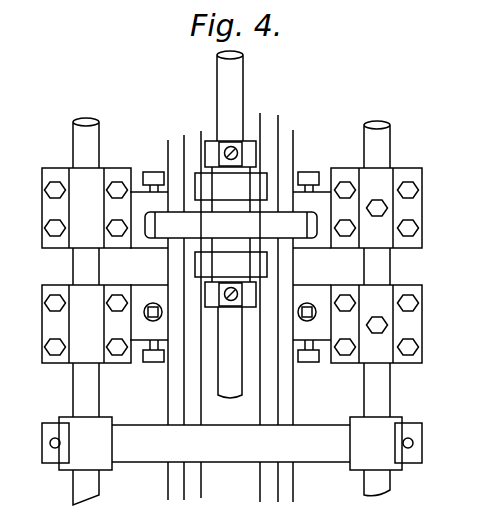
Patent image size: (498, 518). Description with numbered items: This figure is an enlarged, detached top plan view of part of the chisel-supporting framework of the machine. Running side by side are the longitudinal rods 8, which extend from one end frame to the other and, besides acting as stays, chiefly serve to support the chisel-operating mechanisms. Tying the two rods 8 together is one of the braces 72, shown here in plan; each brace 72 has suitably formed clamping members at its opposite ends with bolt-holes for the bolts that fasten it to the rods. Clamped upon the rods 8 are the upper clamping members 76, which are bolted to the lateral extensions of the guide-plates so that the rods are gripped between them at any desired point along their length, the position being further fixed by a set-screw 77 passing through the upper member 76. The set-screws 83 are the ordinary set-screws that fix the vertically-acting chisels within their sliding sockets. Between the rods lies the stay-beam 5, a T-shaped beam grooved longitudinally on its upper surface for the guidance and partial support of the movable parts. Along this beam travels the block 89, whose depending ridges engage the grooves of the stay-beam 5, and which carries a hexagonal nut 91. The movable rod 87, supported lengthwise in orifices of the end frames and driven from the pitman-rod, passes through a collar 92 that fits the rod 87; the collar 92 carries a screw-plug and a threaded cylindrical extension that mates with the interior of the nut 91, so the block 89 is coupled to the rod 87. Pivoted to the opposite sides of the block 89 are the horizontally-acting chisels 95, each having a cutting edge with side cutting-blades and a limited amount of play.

The stay-beam 5 is at (230, 236).
The rod 8 is at (231, 311).
The brace 72 is at (232, 443).
The upper clamping member 76 is at (232, 265).
The set-screw 77 is at (379, 211).
The set-screw 83 is at (154, 172).
The rod 87 is at (230, 352).
The block 89 is at (231, 225).
The nut 91 is at (231, 224).
The collar 92 is at (246, 150).
The horizontally-acting chisel 95 is at (155, 227).